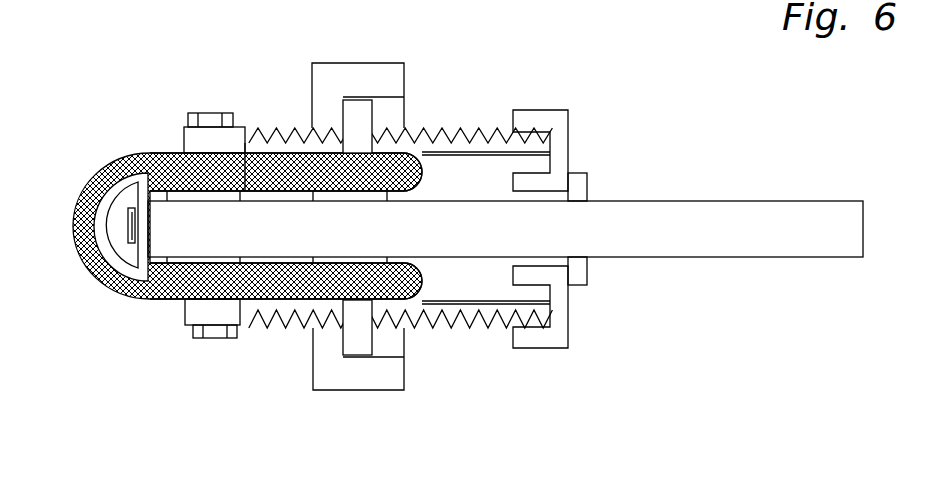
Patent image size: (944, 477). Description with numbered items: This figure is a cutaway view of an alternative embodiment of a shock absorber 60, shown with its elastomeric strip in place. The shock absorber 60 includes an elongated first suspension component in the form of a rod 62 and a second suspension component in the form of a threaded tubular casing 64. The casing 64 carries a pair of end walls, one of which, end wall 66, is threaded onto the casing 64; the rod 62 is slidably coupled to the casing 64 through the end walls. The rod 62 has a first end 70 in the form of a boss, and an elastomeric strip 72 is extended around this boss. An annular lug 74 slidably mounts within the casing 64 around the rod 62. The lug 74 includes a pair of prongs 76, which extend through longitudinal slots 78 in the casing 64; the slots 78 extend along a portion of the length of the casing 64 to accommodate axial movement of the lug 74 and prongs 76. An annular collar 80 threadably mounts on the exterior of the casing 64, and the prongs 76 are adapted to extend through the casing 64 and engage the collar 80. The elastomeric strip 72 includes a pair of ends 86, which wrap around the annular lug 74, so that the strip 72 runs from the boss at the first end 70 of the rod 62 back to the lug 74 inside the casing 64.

The shock absorber 60 is at (608, 129).
The rod 62 is at (745, 207).
The threaded tubular casing 64 is at (258, 128).
The end wall 66 is at (567, 314).
The first end 70 is at (108, 256).
The elastomeric strip 72 is at (149, 303).
The annular lug 74 is at (287, 305).
The prongs 76 is at (372, 117).
The longitudinal slots 78 is at (491, 128).
The annular collar 80 is at (313, 372).
The ends 86 is at (424, 171).